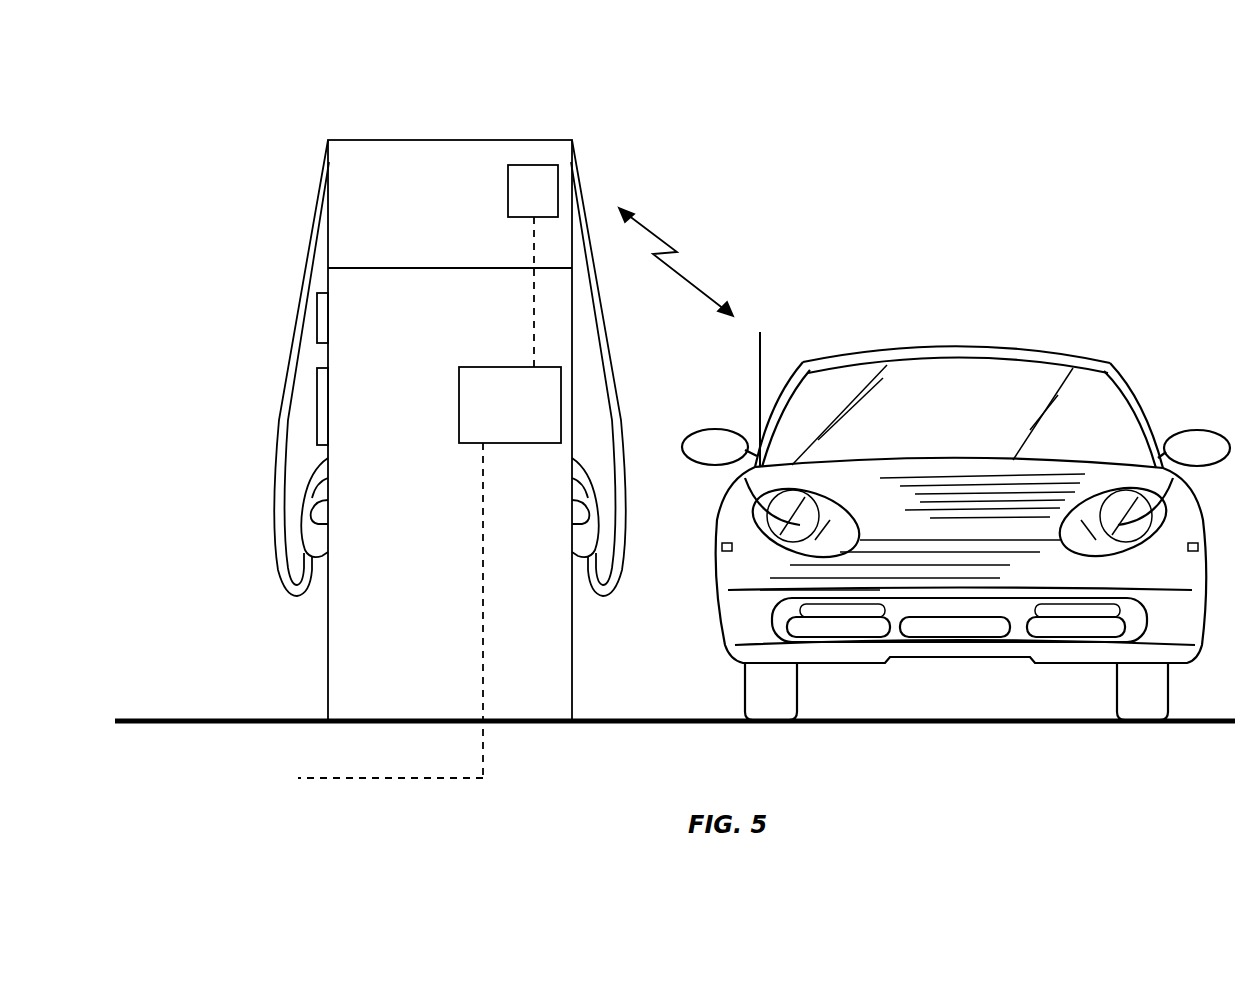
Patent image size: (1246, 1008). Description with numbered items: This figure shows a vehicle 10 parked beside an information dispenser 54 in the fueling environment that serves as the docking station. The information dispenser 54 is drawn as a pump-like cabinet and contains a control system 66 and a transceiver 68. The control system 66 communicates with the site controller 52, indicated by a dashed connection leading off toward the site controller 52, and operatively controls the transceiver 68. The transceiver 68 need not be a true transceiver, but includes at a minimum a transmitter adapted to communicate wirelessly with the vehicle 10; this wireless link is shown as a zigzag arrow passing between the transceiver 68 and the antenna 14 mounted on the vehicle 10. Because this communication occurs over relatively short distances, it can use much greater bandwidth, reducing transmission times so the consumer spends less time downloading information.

The information dispenser 54 is at (512, 80).
The transceiver 68 is at (507, 200).
The control system 66 is at (547, 444).
The site controller 52 is at (310, 642).
The vehicle 10 is at (896, 250).
The antenna 14 is at (761, 350).